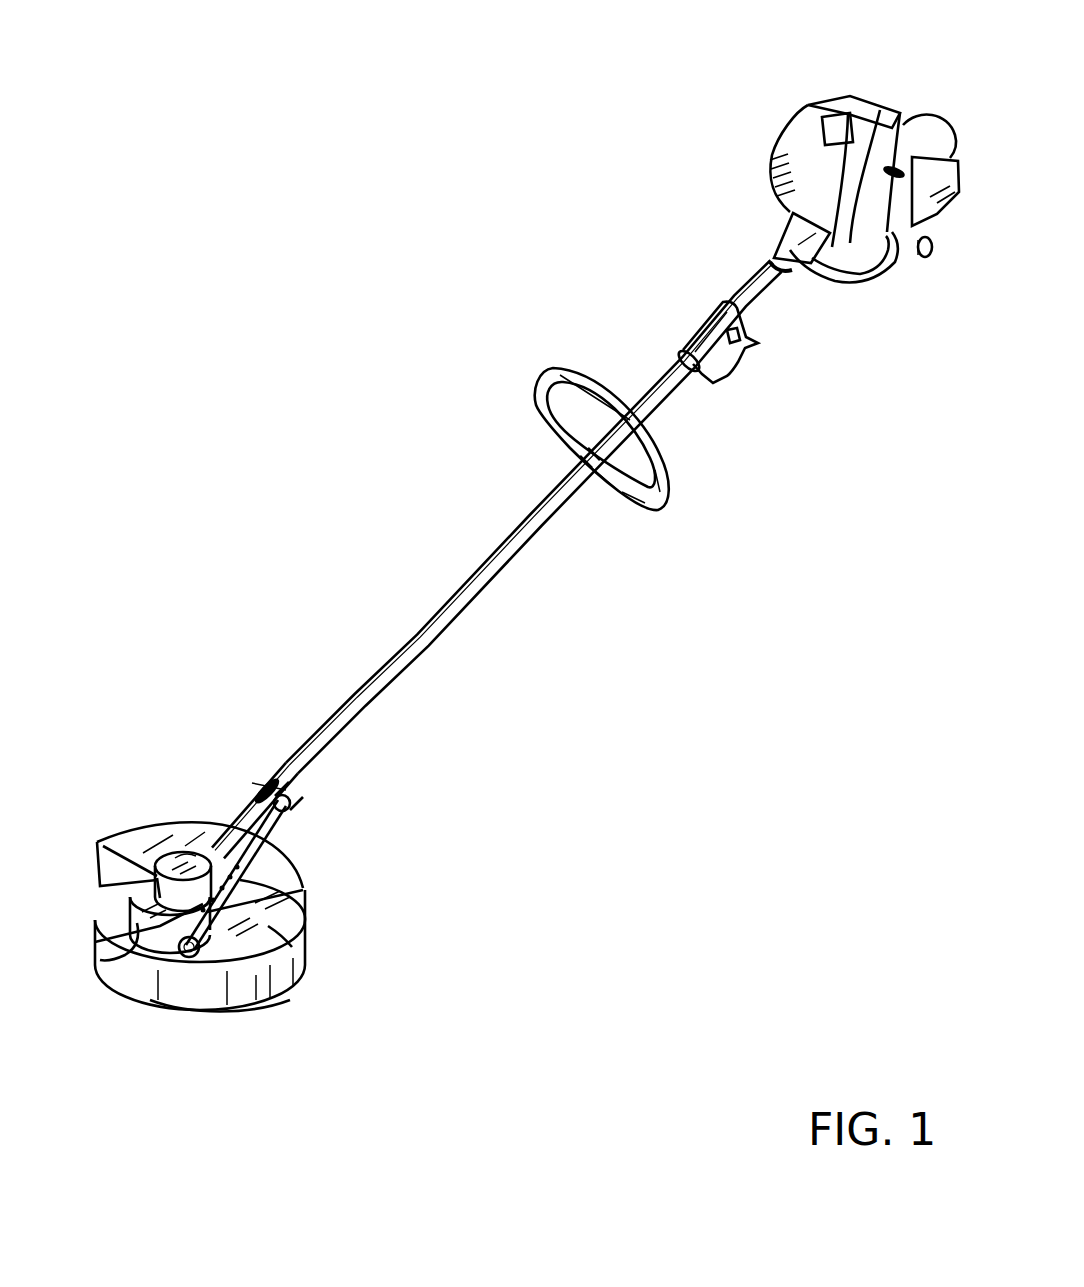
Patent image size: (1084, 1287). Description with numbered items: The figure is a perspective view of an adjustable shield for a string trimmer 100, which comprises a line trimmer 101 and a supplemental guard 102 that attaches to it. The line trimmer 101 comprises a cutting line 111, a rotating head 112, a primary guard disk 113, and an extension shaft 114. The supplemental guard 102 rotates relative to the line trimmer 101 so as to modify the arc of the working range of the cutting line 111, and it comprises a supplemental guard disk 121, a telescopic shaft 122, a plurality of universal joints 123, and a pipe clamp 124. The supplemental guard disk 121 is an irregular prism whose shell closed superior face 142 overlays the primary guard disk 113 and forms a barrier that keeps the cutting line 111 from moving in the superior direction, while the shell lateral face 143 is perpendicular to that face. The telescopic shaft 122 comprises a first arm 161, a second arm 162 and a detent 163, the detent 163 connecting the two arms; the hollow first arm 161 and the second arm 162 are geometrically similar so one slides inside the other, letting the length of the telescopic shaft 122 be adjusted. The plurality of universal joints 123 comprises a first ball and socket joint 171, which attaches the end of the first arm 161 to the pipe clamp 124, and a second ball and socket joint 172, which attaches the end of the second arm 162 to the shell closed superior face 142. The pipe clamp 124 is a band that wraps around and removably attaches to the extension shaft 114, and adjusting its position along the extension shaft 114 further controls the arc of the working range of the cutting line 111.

The adjustable shield for a string trimmer 100 is at (255, 172).
The line trimmer 101 is at (890, 109).
The supplemental guard 102 is at (240, 1003).
The cutting line 111 is at (78, 902).
The rotating head 112 is at (187, 853).
The primary guard disk 113 is at (118, 835).
The extension shaft 114 is at (510, 563).
The supplemental guard disk 121 is at (213, 1010).
The telescopic shaft 122 is at (292, 812).
The plurality of universal joints 123 is at (708, 705).
The pipe clamp 124 is at (282, 775).
The shell closed superior face 142 is at (270, 928).
The shell lateral face 143 is at (258, 977).
The first arm 161 is at (236, 800).
The second arm 162 is at (215, 853).
The detent 163 is at (160, 853).
The first ball and socket joint 171 is at (290, 806).
The second ball and socket joint 172 is at (143, 1070).